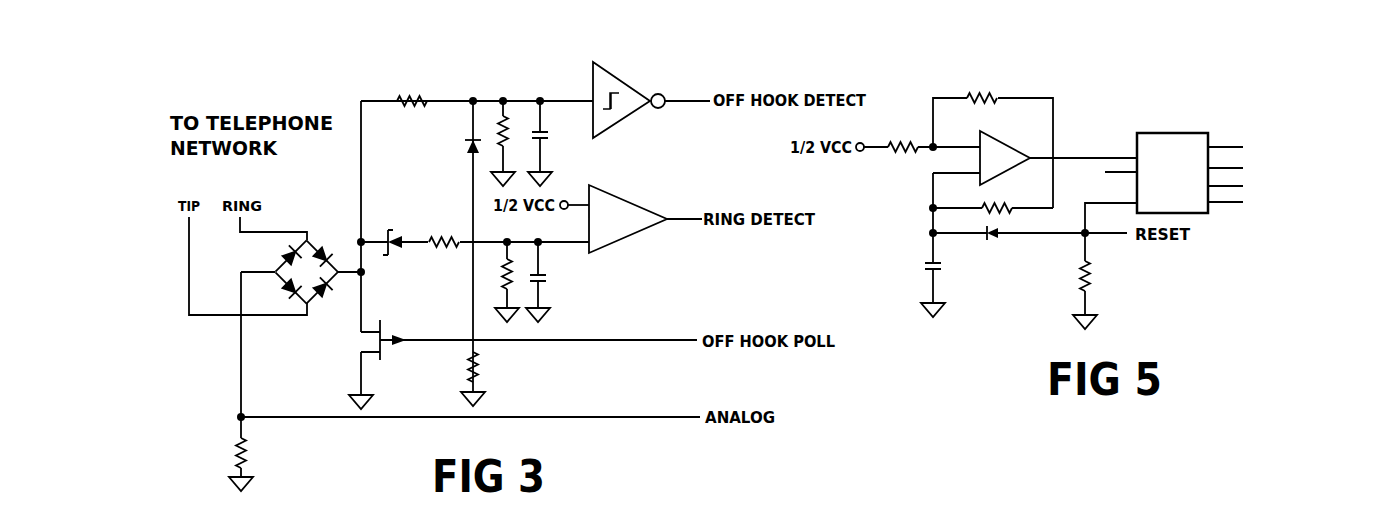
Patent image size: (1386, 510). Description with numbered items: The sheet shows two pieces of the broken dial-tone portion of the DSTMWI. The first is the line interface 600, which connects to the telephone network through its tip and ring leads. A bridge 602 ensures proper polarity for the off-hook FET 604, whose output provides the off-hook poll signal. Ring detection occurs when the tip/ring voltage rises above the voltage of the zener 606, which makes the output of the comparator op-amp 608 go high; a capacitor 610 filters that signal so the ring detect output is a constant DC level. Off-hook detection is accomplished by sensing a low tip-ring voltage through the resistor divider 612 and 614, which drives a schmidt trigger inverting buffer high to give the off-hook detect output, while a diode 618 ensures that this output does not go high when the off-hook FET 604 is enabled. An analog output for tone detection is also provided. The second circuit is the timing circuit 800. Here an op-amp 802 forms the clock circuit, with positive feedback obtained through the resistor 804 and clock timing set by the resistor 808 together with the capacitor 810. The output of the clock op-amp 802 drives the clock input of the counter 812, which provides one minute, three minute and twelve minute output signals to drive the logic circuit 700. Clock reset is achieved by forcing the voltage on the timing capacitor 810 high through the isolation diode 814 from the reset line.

In FIG. 3, the line interface 600 is at (330, 68).
In FIG. 3, the bridge 602 is at (306, 258).
In FIG. 3, the off-hook FET 604 is at (523, 355).
In FIG. 3, the zener 606 is at (475, 227).
In FIG. 3, the comparator op-amp 608 is at (602, 211).
In FIG. 3, the capacitor 610 is at (546, 282).
In FIG. 3, the resistor divider 612 is at (421, 88).
In FIG. 3, the resistor divider 614 is at (589, 124).
In FIG. 3, the diode 618 is at (453, 253).
In FIG. 5, the logic circuit 700 is at (1100, 509).
In FIG. 5, the timing circuit 800 is at (1124, 90).
In FIG. 5, the op-amp 802 is at (1035, 175).
In FIG. 5, the resistor 804 is at (993, 136).
In FIG. 5, the resistor 808 is at (991, 196).
In FIG. 5, the capacitor 810 is at (910, 273).
In FIG. 5, the counter 812 is at (1203, 162).
In FIG. 5, the isolation diode 814 is at (1035, 266).